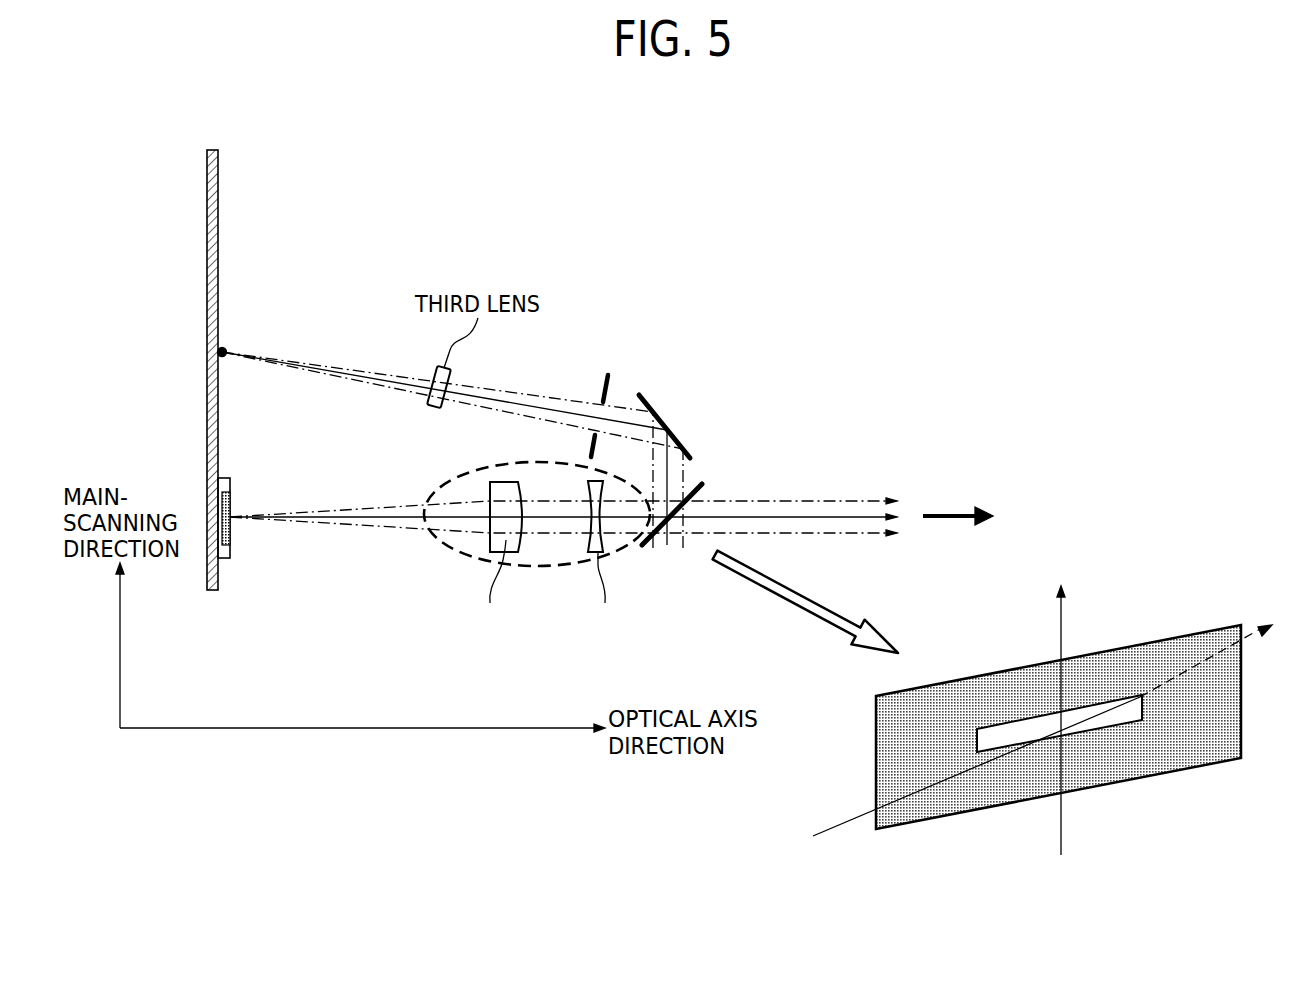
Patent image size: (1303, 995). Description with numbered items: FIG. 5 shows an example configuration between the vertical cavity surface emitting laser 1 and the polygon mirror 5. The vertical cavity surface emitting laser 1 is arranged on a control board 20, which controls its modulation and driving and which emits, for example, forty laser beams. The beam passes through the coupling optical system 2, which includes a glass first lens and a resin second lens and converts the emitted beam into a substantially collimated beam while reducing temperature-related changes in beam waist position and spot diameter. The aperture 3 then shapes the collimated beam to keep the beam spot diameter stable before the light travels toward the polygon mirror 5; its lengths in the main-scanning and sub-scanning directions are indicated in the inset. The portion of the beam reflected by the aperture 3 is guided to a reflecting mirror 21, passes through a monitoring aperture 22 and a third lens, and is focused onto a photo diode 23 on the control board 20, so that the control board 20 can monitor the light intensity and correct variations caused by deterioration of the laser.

The control board 20 is at (220, 208).
The photo diode (PD) 23 is at (222, 352).
The vertical cavity surface emitting laser 1 is at (232, 480).
The coupling optical system 2 is at (452, 565).
The monitoring aperture 22 is at (605, 380).
The reflecting mirror 21 is at (665, 422).
The polygon mirror 5 is at (1029, 486).
The aperture 3 is at (667, 530).